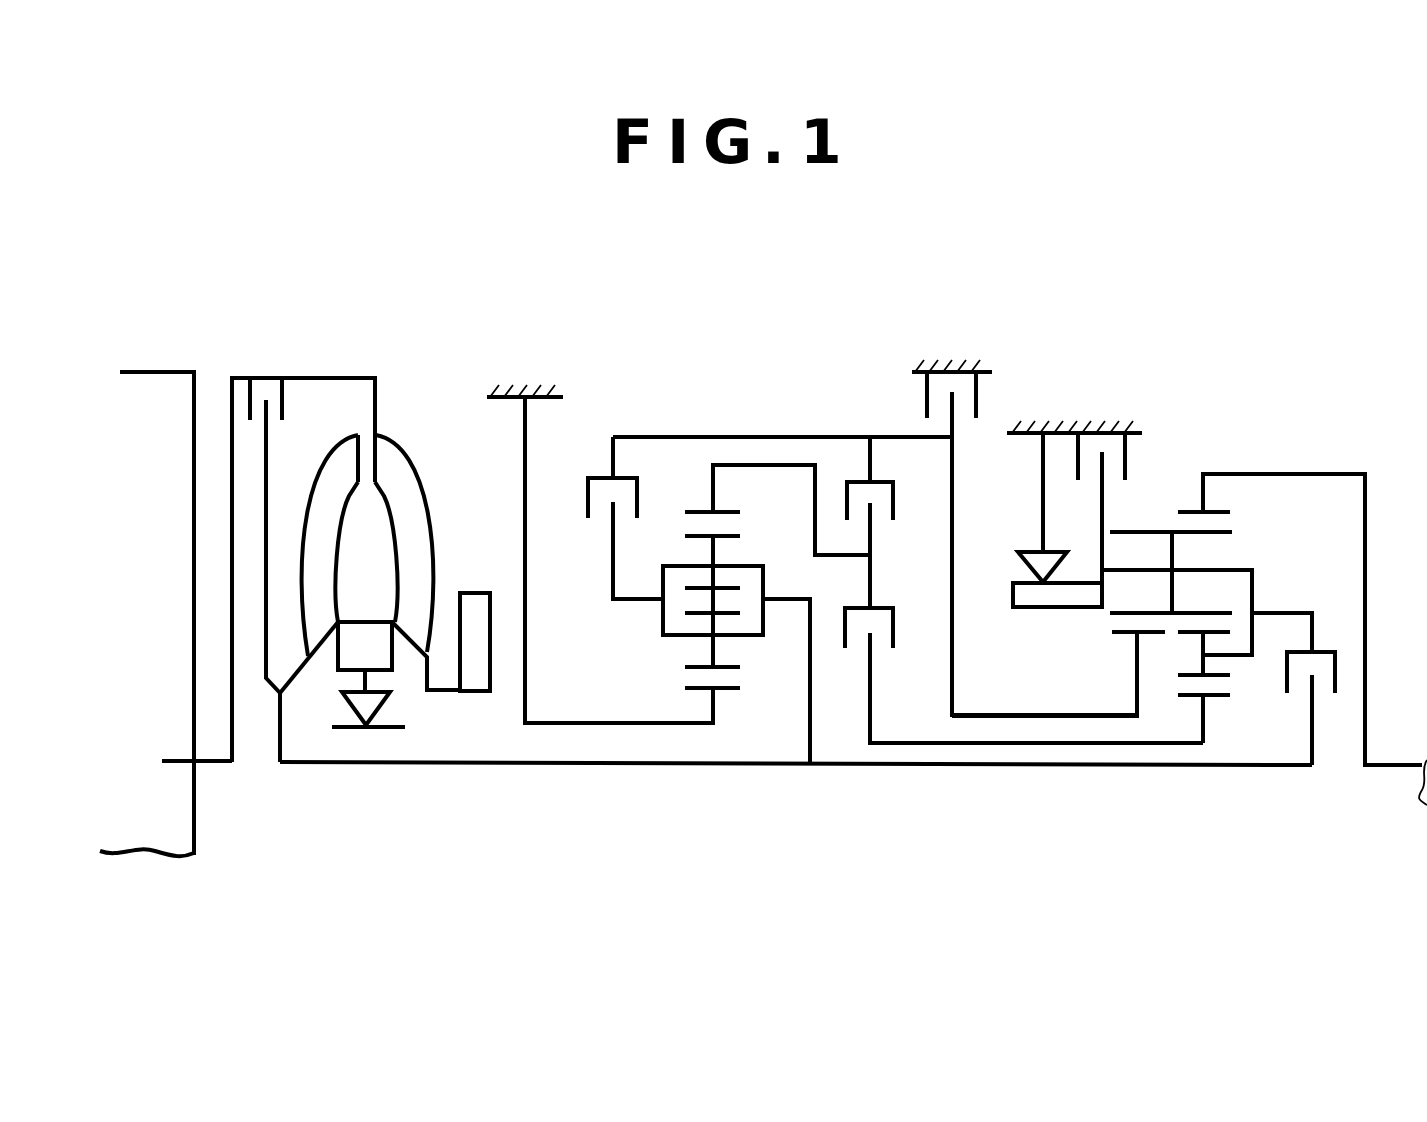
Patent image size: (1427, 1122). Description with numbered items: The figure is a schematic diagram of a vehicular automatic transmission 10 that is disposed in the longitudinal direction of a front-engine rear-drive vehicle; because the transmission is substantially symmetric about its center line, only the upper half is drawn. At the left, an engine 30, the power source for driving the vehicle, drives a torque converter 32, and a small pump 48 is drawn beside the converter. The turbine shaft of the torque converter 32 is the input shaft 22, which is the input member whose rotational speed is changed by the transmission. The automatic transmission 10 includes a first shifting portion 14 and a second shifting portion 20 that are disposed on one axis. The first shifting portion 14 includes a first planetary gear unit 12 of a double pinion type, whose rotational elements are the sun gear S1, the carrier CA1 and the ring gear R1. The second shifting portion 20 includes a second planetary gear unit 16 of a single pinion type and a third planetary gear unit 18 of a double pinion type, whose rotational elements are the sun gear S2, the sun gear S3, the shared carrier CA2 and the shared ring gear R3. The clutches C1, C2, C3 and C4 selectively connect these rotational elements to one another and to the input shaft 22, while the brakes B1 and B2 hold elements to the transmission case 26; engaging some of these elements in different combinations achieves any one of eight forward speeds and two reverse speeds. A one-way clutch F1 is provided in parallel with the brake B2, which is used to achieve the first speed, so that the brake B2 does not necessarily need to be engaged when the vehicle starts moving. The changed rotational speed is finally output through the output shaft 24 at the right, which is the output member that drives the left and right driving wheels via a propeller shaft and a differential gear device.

The automatic transmission 10 is at (1287, 368).
The first planetary gear unit 12 is at (729, 537).
The first shifting portion 14 is at (864, 600).
The second planetary gear unit 16 is at (1150, 524).
The third planetary gear unit 18 is at (1298, 567).
The second shifting portion 20 is at (1186, 612).
The input shaft 22 is at (432, 767).
The output shaft 24 is at (1392, 768).
The transmission case 26 is at (528, 383).
The engine 30 is at (155, 393).
The torque converter 32 is at (399, 396).
The oil pump 48 is at (475, 612).
The clutch C1 is at (1024, 675).
The clutch C2 is at (1305, 689).
The clutch C3 is at (895, 522).
The clutch C4 is at (612, 517).
The brake B1 is at (1032, 518).
The brake B2 is at (1103, 492).
The one-way clutch F1 is at (1051, 520).
The ring gear R1 is at (777, 510).
The carrier CA1 is at (699, 665).
The sun gear S1 is at (722, 692).
The sun gear S2 is at (1058, 674).
The sun gear S3 is at (1215, 687).
The carrier CA2 is at (1305, 569).
The ring gear R3 is at (1299, 619).